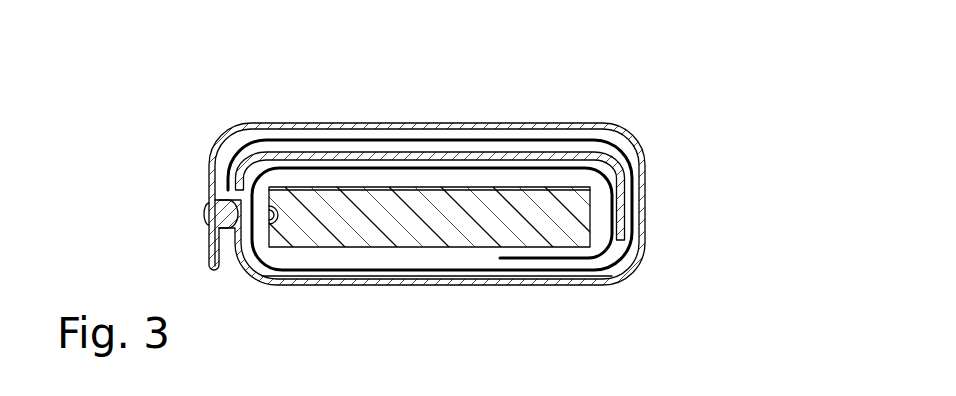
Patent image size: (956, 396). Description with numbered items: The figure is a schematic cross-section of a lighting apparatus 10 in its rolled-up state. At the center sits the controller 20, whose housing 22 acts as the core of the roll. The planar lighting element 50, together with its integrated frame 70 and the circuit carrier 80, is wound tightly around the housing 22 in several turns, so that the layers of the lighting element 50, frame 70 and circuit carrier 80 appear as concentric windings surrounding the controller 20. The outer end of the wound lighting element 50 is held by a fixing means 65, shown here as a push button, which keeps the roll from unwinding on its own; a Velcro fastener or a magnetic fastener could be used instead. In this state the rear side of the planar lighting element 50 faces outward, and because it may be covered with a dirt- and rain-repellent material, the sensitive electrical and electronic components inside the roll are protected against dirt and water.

The lighting apparatus 10 is at (722, 195).
The controller 20 is at (373, 232).
The housing 22 is at (453, 247).
The planar lighting element 50 is at (645, 232).
The fixing means 65 is at (204, 216).
The frame 70 is at (524, 141).
The circuit carrier 80 is at (443, 130).